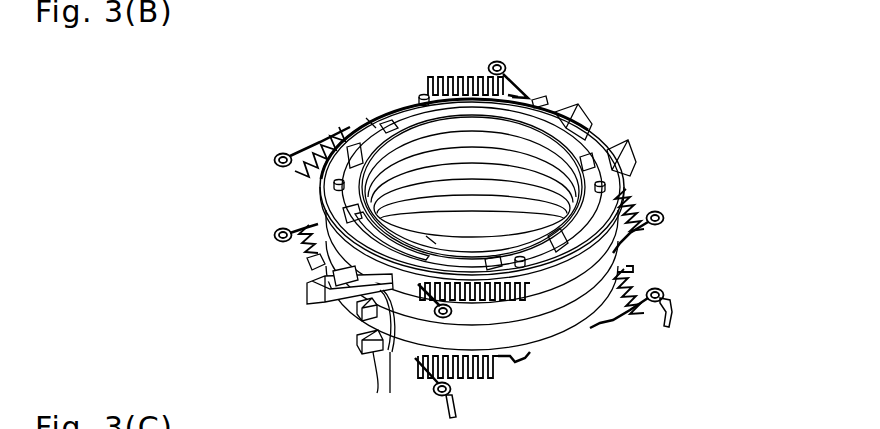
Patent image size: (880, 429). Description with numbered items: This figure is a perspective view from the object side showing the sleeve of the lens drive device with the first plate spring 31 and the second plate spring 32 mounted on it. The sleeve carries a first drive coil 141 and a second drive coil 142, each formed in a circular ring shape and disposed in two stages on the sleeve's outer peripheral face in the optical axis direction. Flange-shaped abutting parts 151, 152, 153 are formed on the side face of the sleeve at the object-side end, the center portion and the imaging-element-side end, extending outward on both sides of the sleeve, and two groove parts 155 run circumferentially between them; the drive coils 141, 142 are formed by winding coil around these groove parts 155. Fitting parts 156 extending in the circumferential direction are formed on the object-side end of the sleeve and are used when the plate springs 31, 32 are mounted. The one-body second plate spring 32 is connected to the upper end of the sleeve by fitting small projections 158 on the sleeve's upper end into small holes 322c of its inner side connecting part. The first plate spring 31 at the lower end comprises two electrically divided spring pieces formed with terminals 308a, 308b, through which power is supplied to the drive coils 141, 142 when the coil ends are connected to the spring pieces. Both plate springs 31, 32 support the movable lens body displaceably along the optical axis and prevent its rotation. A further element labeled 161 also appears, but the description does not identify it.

The first plate spring 31 is at (540, 313).
The second plate spring 32 is at (620, 186).
The first drive coil 141 is at (553, 325).
The second drive coil 142 is at (603, 325).
The abutting part 151 is at (573, 115).
The abutting part 152 is at (367, 303).
The abutting part 153 is at (432, 359).
The groove part 155 is at (630, 263).
The fitting part 156 is at (430, 240).
The small projection 158 is at (422, 96).
The small hole 322c is at (549, 138).
The lead wire 161 is at (414, 6).
The terminal 308a is at (684, 316).
The terminal 308b is at (477, 405).